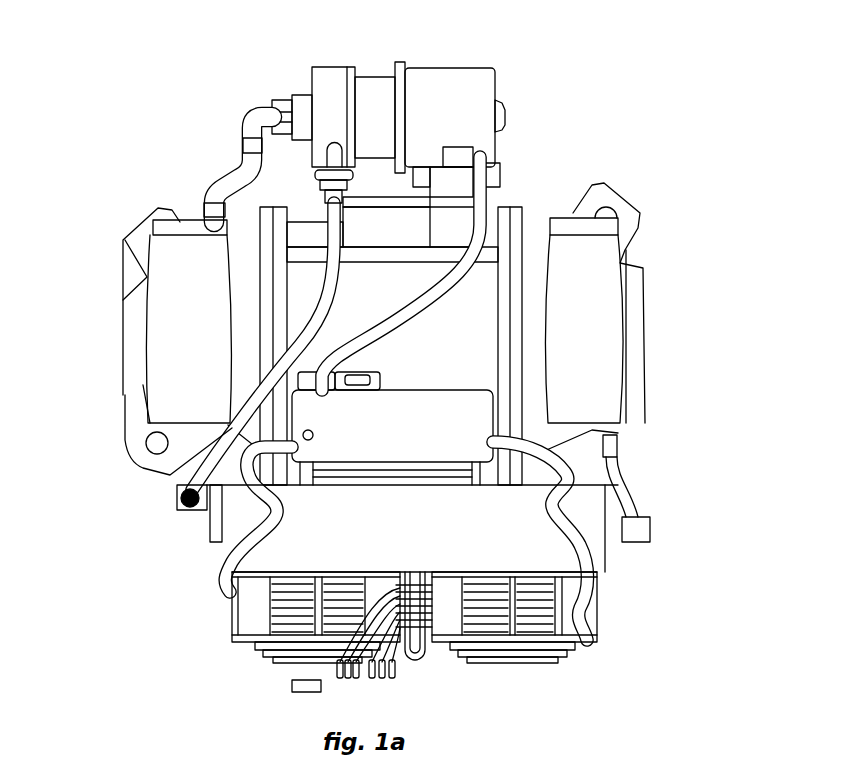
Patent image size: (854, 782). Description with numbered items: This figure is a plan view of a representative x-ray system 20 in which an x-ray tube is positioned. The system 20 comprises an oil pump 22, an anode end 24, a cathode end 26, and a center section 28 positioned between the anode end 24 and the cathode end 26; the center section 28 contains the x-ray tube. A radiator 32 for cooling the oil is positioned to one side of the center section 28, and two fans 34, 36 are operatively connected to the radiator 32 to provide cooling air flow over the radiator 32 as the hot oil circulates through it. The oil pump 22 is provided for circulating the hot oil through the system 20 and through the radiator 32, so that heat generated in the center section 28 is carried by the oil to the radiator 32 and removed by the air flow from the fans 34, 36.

The x-ray system 20 is at (630, 122).
The oil pump 22 is at (447, 80).
The anode end 24 is at (158, 340).
The cathode end 26 is at (660, 338).
The center section 28 is at (458, 310).
The radiator 32 is at (273, 545).
The fan 34 is at (277, 643).
The fan 36 is at (533, 637).